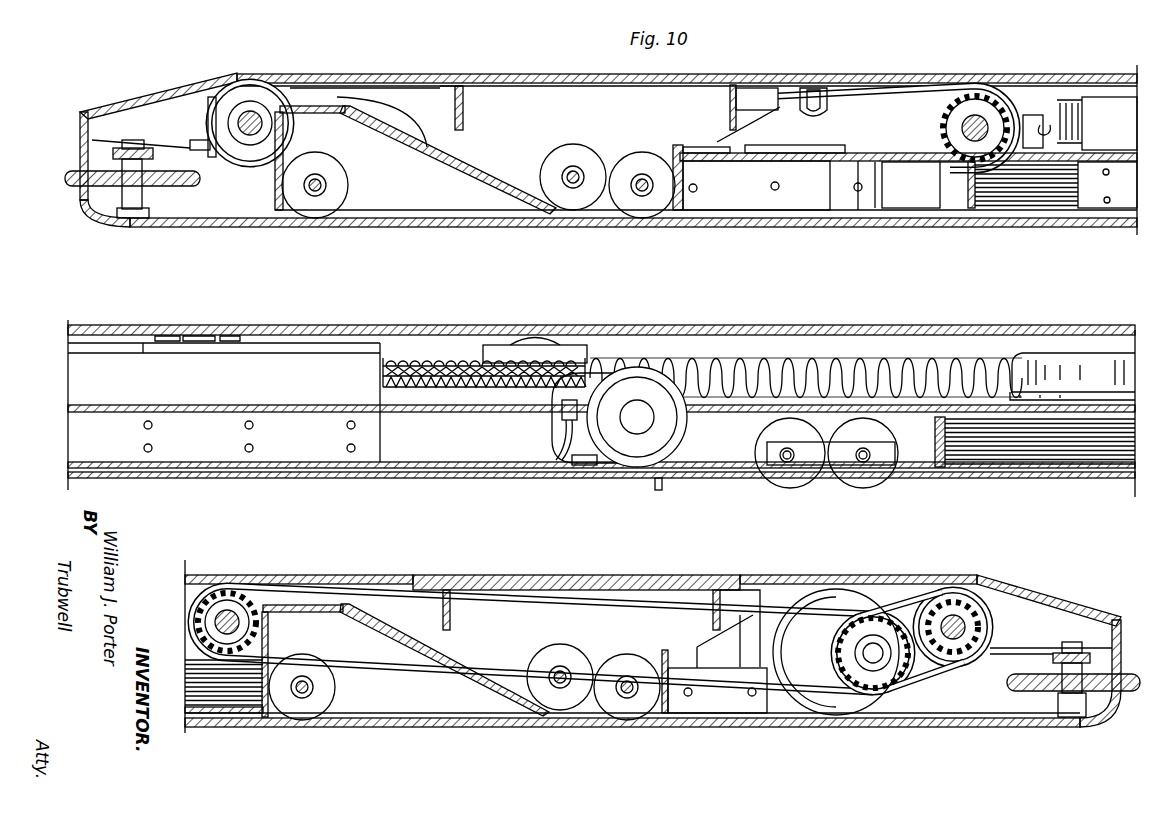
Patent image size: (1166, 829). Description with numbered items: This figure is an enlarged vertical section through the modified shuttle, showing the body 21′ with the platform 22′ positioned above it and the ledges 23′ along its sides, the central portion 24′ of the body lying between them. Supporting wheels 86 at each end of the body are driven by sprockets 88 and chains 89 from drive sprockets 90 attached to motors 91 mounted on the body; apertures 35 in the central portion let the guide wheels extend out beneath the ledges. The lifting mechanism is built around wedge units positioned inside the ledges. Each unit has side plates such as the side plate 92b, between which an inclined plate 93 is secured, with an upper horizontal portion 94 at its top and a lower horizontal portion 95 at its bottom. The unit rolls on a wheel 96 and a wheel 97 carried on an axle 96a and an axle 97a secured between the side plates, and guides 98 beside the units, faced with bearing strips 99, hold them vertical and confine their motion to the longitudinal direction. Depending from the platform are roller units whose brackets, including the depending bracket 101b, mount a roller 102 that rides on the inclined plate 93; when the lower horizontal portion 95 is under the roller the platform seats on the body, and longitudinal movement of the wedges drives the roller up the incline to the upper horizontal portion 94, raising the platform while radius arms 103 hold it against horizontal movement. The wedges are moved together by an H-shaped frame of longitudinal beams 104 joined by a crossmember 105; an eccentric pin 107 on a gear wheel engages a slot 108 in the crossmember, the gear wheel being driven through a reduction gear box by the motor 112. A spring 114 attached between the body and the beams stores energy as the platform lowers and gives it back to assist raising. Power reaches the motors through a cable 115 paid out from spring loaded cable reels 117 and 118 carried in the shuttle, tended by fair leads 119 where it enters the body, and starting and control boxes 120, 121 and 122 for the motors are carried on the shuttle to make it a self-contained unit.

The platform 22′ is at (505, 76).
The apertures 35 is at (66, 170).
The sprockets 88 is at (228, 111).
The wheels 86 is at (212, 124).
The chains 89 is at (296, 98).
The upper horizontal portion 94 is at (322, 112).
The inclined plate 93 is at (490, 178).
The wheel 96 is at (333, 172).
The axle 96a is at (321, 186).
The side plate 92b is at (416, 428).
The ledges 23′ is at (190, 148).
The depending bracket 101b is at (536, 358).
The roller 102 is at (580, 655).
The wheel 97 is at (640, 160).
The axle 97a is at (648, 188).
The radius arms 103 is at (780, 110).
The starting and control box 120 is at (735, 150).
The starting and control box 121 is at (830, 147).
The longitudinal beams 104 is at (745, 206).
The starting and control box 122 is at (921, 185).
The spring loaded cable reel 118 is at (1062, 174).
The eccentric pin 107 is at (190, 344).
The crossmember 105 is at (240, 346).
The slot 108 is at (240, 345).
The spring 114 is at (770, 362).
The cable 115 is at (930, 480).
The motor 112 is at (619, 428).
The fair leads 119 is at (826, 453).
The spring loaded cable reel 117 is at (1010, 462).
The central portion 24′ is at (500, 482).
The bearing strips 99 is at (717, 690).
The guides 98 is at (745, 720).
The lower horizontal portion 95 is at (590, 718).
The motors 91 is at (836, 652).
The drive sprockets 90 is at (845, 668).
The body 21′ is at (940, 712).